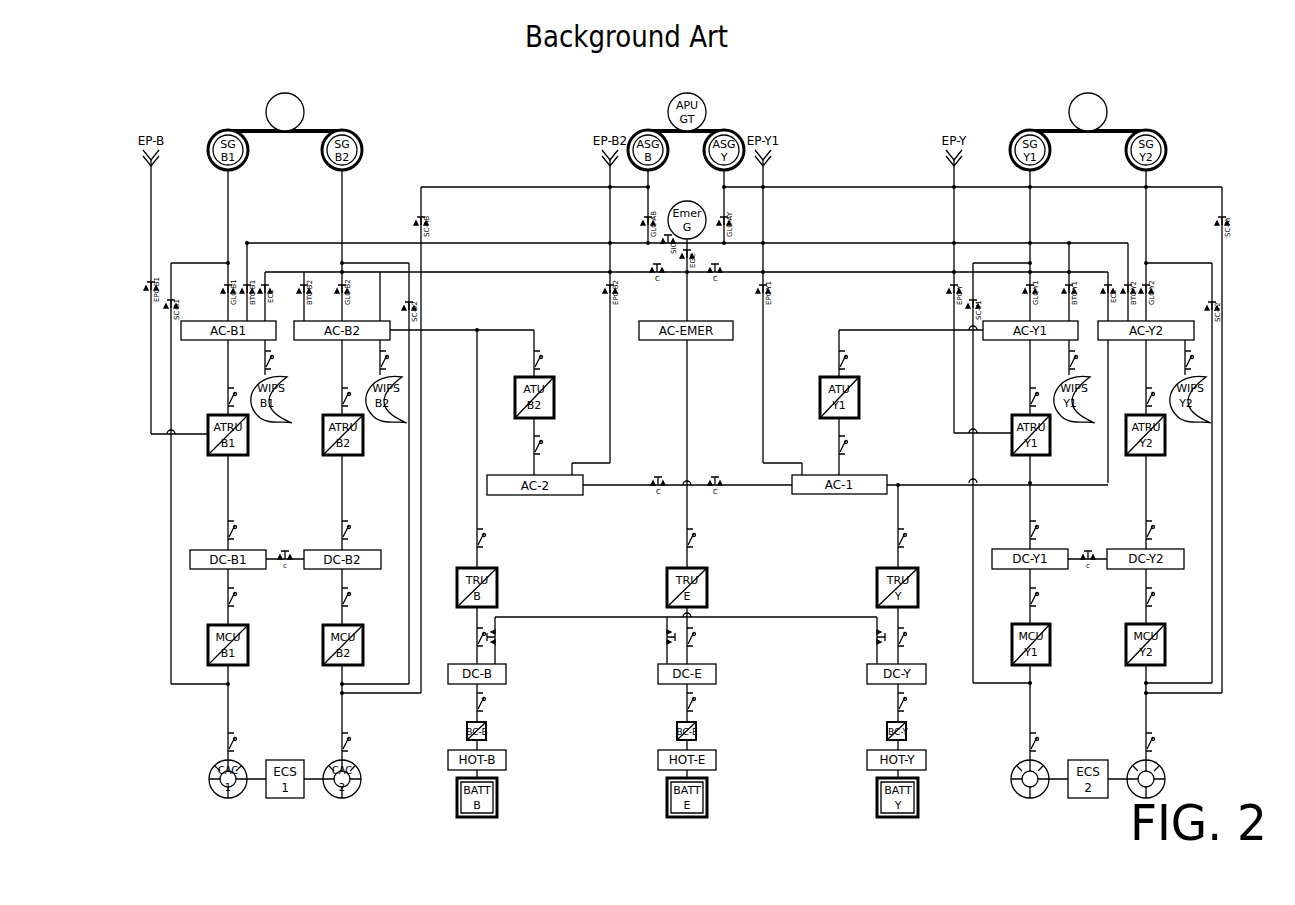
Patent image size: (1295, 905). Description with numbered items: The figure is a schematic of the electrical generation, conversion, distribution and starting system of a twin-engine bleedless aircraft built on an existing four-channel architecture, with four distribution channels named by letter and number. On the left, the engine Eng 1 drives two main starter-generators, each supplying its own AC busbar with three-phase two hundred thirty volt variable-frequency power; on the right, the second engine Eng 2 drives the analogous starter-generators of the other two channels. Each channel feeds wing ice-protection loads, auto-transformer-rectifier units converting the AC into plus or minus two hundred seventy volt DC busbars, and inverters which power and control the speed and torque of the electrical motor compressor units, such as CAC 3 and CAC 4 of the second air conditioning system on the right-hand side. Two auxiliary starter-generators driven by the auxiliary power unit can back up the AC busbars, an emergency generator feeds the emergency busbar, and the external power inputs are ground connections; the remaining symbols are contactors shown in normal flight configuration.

The engine 1 is at (285, 112).
The engine 2 is at (1088, 112).
The electrical motor compressor unit 3 is at (1030, 779).
The electrical motor compressor unit 4 is at (1146, 779).